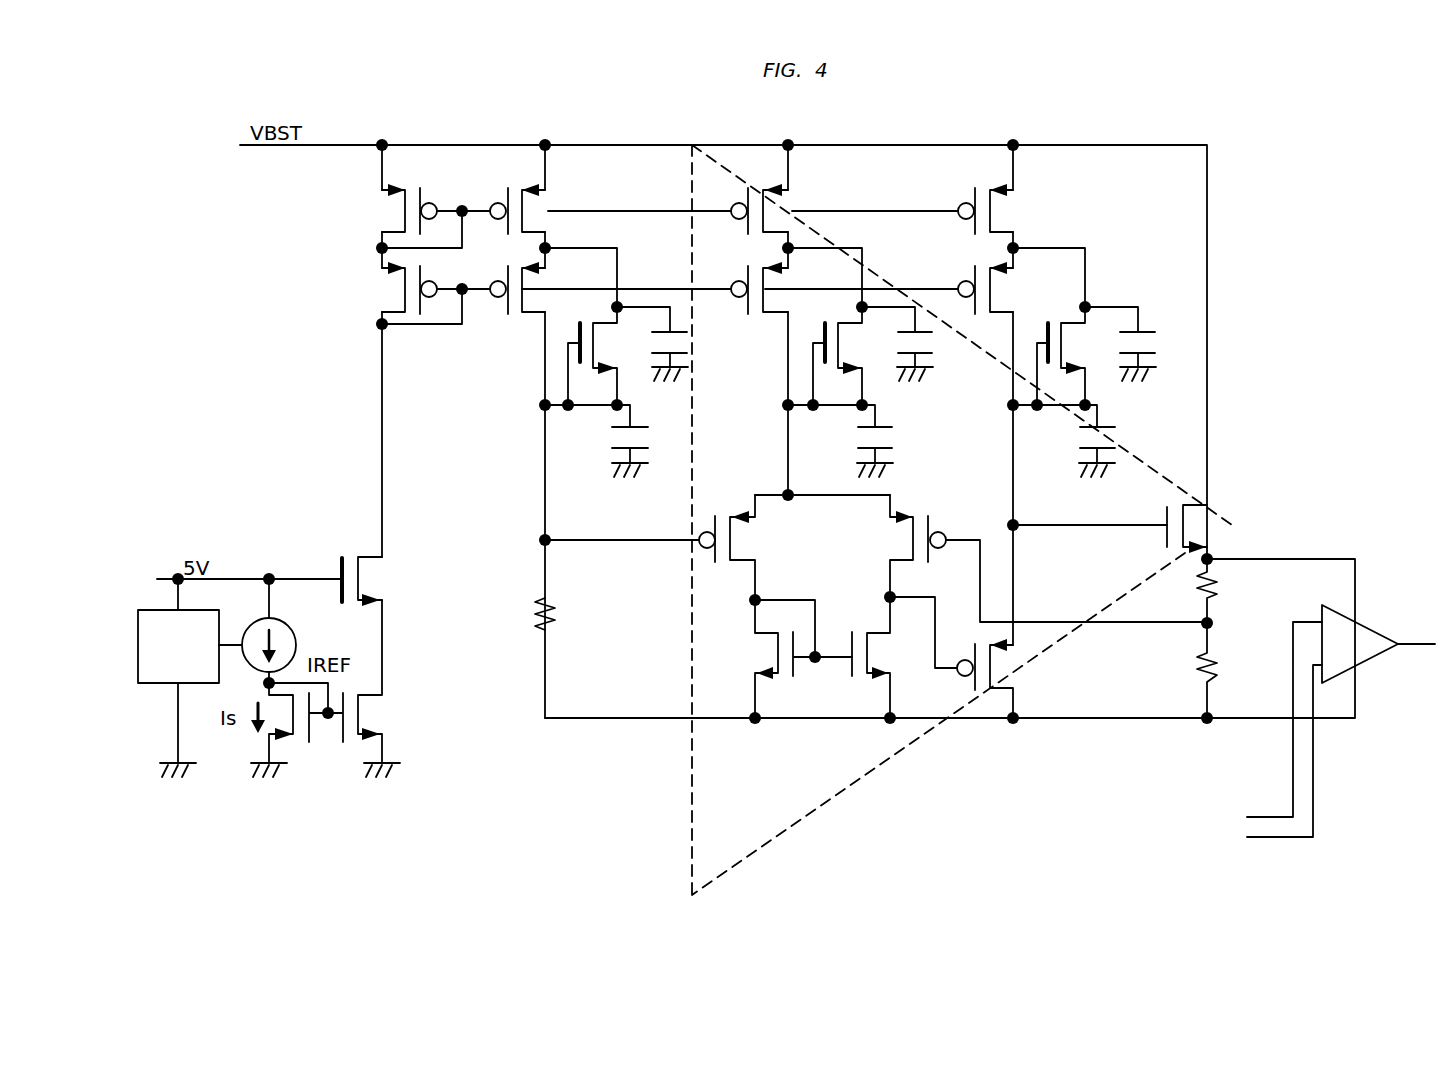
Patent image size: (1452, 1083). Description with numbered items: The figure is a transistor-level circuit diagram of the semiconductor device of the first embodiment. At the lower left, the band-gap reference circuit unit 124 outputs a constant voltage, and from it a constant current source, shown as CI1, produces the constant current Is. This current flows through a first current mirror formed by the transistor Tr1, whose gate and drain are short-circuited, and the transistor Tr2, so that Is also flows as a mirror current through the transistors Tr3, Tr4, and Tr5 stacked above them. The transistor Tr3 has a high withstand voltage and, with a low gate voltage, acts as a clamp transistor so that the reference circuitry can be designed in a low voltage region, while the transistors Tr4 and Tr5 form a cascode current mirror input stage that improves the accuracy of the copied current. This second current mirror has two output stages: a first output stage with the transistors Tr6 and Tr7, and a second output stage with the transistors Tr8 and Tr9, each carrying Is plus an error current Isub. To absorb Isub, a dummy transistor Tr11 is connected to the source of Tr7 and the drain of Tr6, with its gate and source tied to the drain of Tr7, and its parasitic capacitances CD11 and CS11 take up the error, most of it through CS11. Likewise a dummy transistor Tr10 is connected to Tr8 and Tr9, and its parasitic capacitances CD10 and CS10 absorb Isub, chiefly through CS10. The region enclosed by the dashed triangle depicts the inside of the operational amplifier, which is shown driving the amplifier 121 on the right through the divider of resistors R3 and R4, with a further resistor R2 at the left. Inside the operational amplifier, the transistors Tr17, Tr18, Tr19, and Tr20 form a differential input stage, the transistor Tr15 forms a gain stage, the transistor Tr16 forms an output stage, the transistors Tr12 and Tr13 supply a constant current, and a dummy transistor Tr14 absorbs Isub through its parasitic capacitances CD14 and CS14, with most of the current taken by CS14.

The transistor Tr1 is at (309, 742).
The transistor Tr2 is at (343, 742).
The transistor Tr3 is at (340, 560).
The transistor Tr4 is at (378, 214).
The transistor Tr5 is at (378, 292).
The transistor Tr6 is at (545, 203).
The transistor Tr7 is at (514, 312).
The transistor Tr8 is at (783, 201).
The transistor Tr9 is at (758, 264).
The dummy transistor Tr10 is at (849, 359).
The dummy transistor Tr11 is at (605, 359).
The transistor Tr12 is at (1013, 210).
The transistor Tr13 is at (1010, 300).
The dummy transistor Tr14 is at (1073, 359).
The transistor Tr15 is at (1010, 671).
The transistor Tr16 is at (1207, 535).
The transistor Tr17 is at (748, 543).
The transistor Tr18 is at (892, 541).
The transistor Tr19 is at (757, 661).
The transistor Tr20 is at (912, 663).
The parasitic capacitance CD10 is at (930, 340).
The parasitic capacitance CD11 is at (684, 346).
The parasitic capacitance CD14 is at (1180, 337).
The parasitic capacitance CS10 is at (898, 446).
The parasitic capacitance CS11 is at (650, 446).
The parasitic capacitance CS14 is at (1151, 427).
The resistor R2 is at (562, 620).
The resistor R3 is at (1222, 590).
The resistor R4 is at (1222, 670).
The constant current source CI1 is at (297, 646).
The comparator 121 is at (1373, 626).
The BGR circuit unit 124 is at (138, 650).